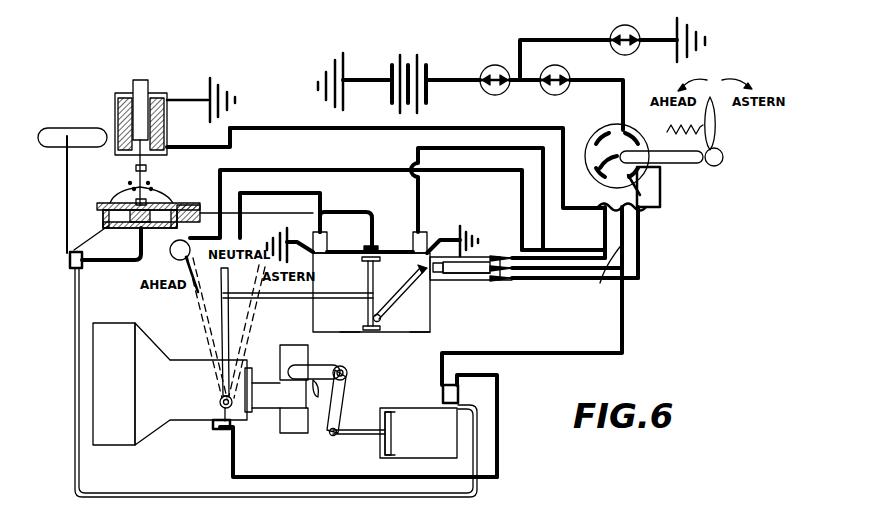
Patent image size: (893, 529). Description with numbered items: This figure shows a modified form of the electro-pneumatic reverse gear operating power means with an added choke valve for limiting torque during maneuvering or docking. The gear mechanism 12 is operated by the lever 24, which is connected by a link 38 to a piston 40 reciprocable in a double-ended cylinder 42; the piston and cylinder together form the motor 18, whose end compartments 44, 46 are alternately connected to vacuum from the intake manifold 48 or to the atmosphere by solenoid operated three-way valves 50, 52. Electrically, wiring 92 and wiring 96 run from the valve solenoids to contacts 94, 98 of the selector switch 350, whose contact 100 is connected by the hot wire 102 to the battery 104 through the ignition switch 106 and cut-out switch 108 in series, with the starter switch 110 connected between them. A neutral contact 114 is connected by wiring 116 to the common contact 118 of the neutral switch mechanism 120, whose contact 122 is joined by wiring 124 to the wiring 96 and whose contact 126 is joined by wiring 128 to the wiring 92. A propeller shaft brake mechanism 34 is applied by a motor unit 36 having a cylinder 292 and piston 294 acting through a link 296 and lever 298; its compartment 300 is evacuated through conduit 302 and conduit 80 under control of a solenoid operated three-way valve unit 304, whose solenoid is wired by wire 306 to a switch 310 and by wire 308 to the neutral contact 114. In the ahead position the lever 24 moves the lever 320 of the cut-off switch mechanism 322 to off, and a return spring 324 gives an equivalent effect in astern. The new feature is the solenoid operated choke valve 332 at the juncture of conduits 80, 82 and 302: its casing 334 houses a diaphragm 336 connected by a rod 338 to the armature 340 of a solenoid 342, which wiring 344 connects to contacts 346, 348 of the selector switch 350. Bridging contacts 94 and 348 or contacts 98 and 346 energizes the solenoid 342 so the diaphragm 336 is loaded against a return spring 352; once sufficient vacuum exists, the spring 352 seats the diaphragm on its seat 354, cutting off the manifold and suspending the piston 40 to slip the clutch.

The gear mechanism 12 is at (187, 410).
The motor 18 is at (430, 303).
The lever 24 is at (217, 333).
The brake mechanism 34 is at (298, 425).
The motor unit 36 is at (405, 408).
The link 38 is at (278, 298).
The piston 40 is at (352, 322).
The double-ended cylinder 42 is at (430, 333).
The end compartment 44 is at (362, 331).
The end compartment 46 is at (405, 325).
The intake manifold 48 is at (88, 133).
The three-way valve 50 is at (327, 238).
The three-way valve 52 is at (428, 235).
The conduit 80 is at (66, 200).
The conduit 82 is at (348, 212).
The wiring 92 is at (294, 180).
The contact 94 is at (641, 177).
The wiring 96 is at (547, 237).
The contact 98 is at (584, 189).
The contact 100 is at (636, 138).
The hot wire 102 is at (626, 92).
The battery 104 is at (403, 50).
The ignition switch 106 is at (481, 88).
The cut-out switch 108 is at (568, 89).
The starter switch 110 is at (610, 34).
The neutral contact 114 is at (650, 210).
The wiring 116 is at (610, 262).
The common contact 118 is at (484, 260).
The neutral switch mechanism 120 is at (495, 287).
The contact 122 is at (478, 256).
The wiring 124 is at (510, 260).
The contact 126 is at (460, 281).
The wiring 128 is at (512, 283).
The cylinder 292 is at (403, 460).
The piston 294 is at (395, 443).
The link 296 is at (356, 437).
The lever 298 is at (336, 403).
The compartment 300 is at (460, 452).
The conduit 302 is at (198, 500).
The three-way valve unit 304 is at (458, 395).
The wire 306 is at (347, 478).
The wire 308 is at (628, 337).
The switch 310 is at (223, 432).
The lever 320 is at (182, 279).
The cut-off switch mechanism 322 is at (170, 252).
The return spring 324 is at (718, 133).
The choke valve 332 is at (71, 256).
The casing 334 is at (203, 168).
The diaphragm 336 is at (152, 198).
The rod 338 is at (163, 153).
The armature 340 is at (145, 98).
The solenoid 342 is at (118, 108).
The wiring 344 is at (278, 127).
The contact 346 is at (586, 150).
The contact 348 is at (638, 183).
The selector switch 350 is at (682, 168).
The return spring 352 is at (130, 181).
The seat 354 is at (127, 228).